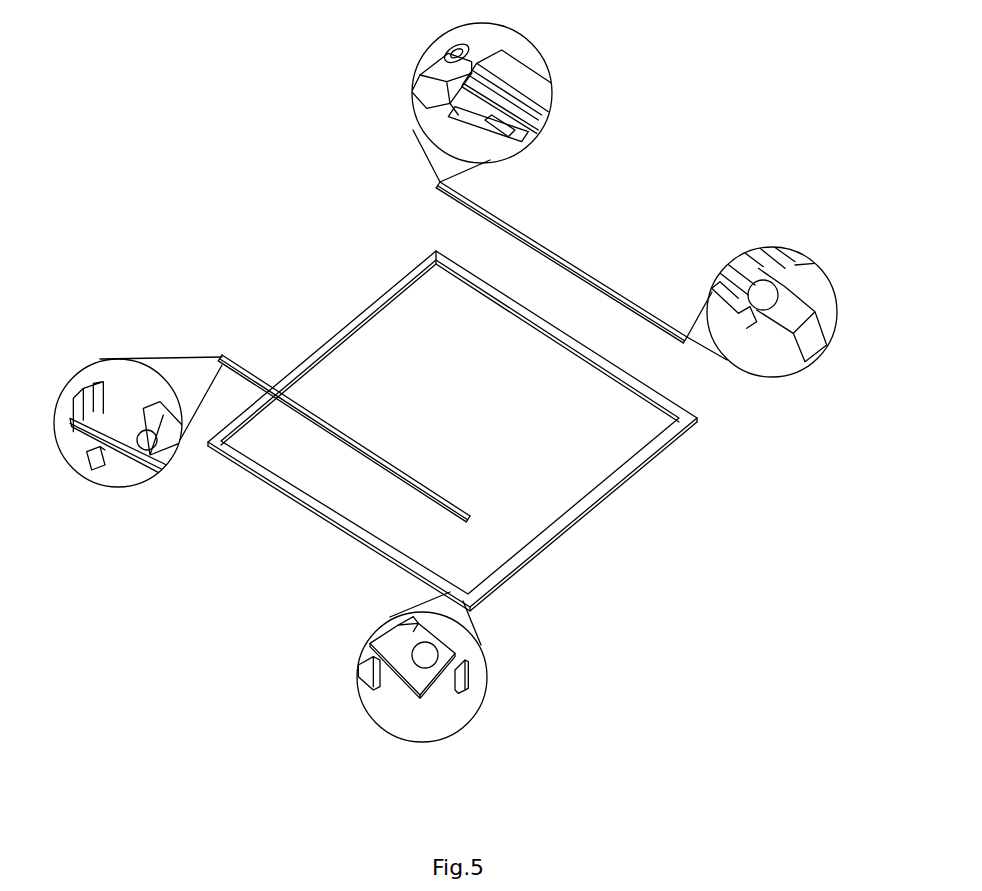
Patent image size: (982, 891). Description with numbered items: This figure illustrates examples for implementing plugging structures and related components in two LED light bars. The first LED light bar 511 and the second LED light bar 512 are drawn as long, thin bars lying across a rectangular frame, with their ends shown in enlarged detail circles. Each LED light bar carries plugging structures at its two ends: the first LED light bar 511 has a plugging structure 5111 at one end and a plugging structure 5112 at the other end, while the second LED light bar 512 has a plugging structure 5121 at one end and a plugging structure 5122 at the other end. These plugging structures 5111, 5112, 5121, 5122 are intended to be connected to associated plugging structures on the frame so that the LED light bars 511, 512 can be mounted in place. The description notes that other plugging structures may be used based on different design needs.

The LED light bar 511 is at (575, 262).
The LED light bar 512 is at (368, 442).
The plugging structure 5111 is at (528, 85).
The plugging structure 5112 is at (856, 248).
The plugging structure 5121 is at (468, 668).
The plugging structure 5122 is at (124, 415).